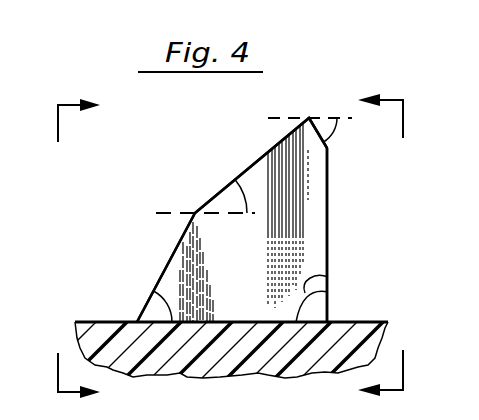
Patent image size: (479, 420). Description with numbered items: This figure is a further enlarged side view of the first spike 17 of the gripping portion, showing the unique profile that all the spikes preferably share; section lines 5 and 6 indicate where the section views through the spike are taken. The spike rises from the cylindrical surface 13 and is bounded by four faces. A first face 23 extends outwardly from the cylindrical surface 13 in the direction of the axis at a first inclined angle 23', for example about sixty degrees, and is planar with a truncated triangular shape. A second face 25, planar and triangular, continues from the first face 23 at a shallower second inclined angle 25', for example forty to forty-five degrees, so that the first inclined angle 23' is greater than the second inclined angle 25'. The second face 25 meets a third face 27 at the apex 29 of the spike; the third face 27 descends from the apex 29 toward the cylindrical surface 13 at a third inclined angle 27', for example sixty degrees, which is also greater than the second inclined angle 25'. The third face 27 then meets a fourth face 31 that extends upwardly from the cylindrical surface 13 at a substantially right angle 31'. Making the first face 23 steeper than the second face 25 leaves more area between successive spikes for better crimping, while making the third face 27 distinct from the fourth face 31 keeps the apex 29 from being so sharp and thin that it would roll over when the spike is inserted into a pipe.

The section line 5- 5 is at (64, 248).
The section line 6- 6 is at (395, 248).
The cylindrical surface 13 is at (108, 321).
The first spike 17 is at (112, 199).
The first face 23 is at (146, 267).
The first inclined angle 23' is at (205, 289).
The second face 25 is at (232, 156).
The second inclined angle 25' is at (212, 176).
The third face 27 is at (354, 170).
The third inclined angle 27' is at (339, 150).
The apex 29 is at (309, 118).
The fourth face 31 is at (368, 235).
The substantially right angle 31' is at (355, 292).